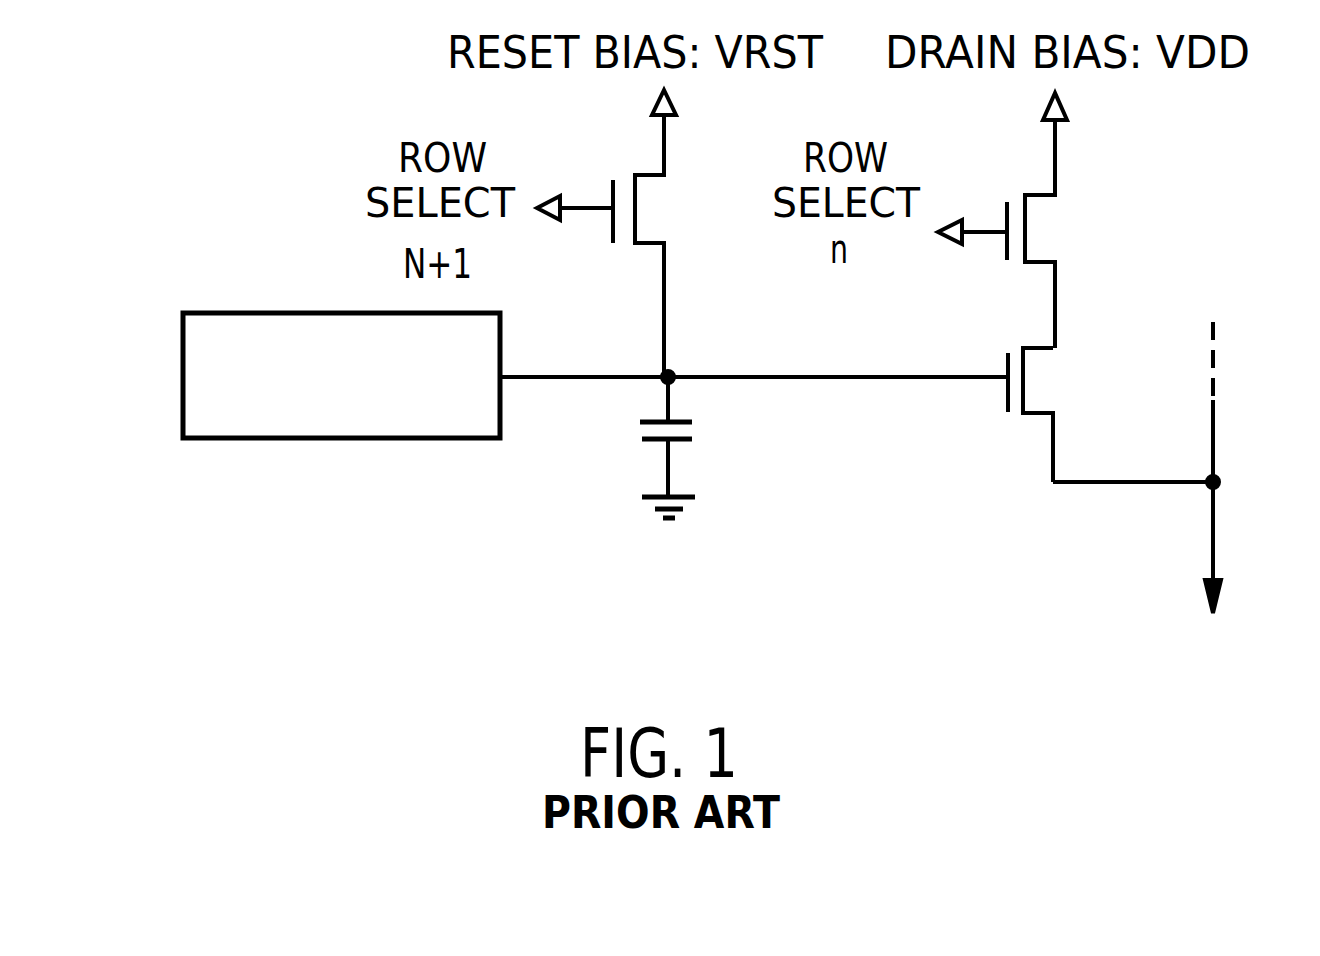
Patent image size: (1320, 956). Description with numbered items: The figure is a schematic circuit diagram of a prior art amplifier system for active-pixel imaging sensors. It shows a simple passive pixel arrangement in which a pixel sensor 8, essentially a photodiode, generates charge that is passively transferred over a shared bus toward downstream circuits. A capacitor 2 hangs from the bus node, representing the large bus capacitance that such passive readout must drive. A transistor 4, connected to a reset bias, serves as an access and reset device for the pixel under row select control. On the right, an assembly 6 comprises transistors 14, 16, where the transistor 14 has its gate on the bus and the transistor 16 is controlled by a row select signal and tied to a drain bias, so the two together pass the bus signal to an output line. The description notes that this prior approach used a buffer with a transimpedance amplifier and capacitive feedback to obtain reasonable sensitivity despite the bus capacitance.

The capacitor 2 is at (698, 433).
The transistor 4 is at (636, 207).
The assembly 6 is at (1137, 290).
The pixel sensor 8 is at (370, 440).
The transistor 14 is at (1025, 392).
The transistor 16 is at (1028, 233).